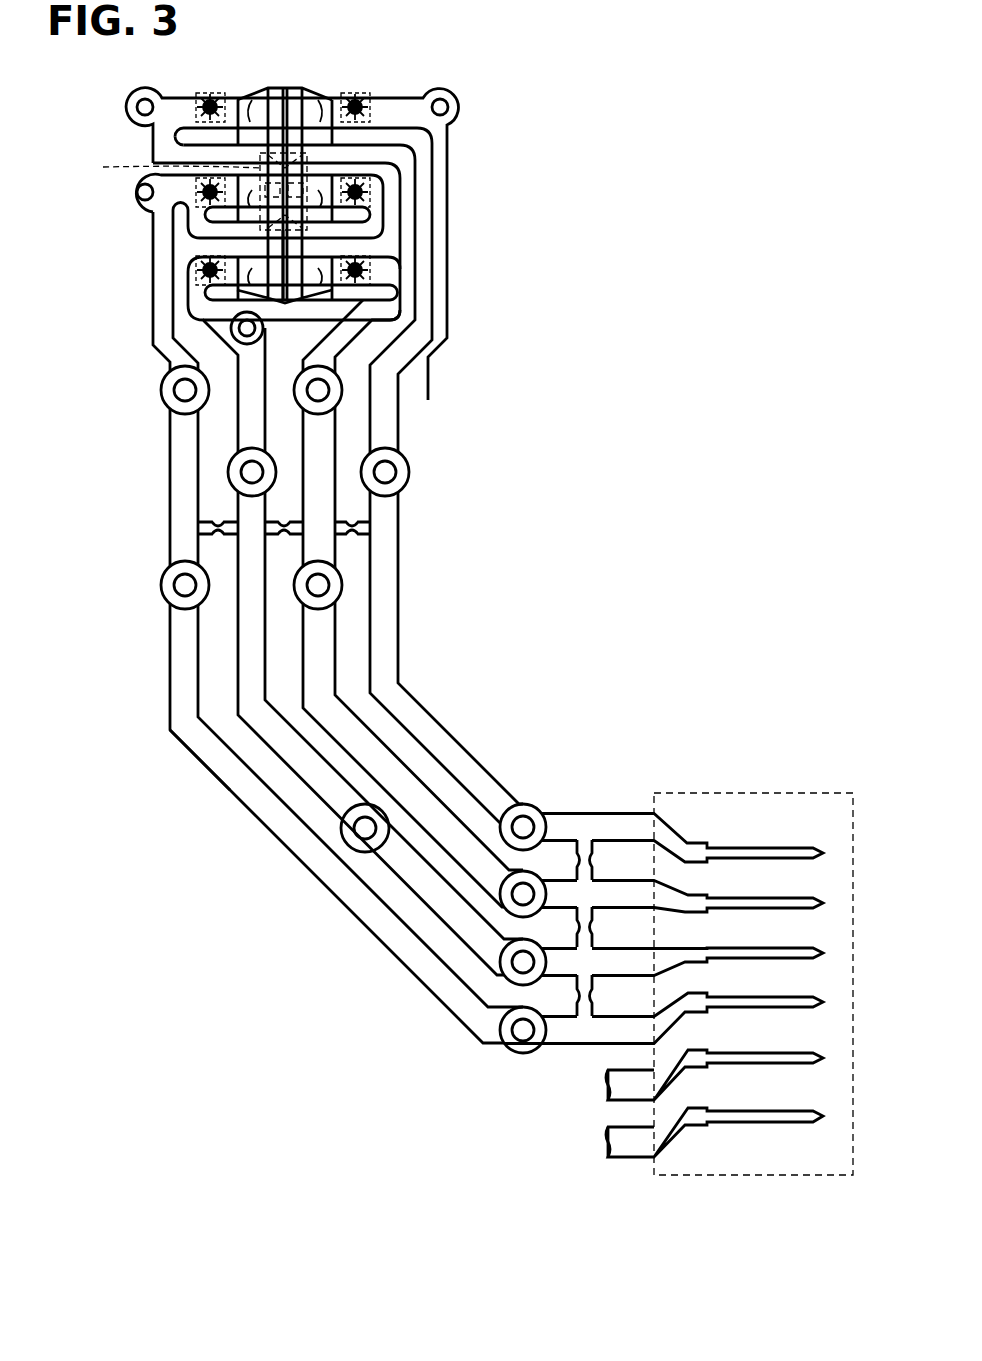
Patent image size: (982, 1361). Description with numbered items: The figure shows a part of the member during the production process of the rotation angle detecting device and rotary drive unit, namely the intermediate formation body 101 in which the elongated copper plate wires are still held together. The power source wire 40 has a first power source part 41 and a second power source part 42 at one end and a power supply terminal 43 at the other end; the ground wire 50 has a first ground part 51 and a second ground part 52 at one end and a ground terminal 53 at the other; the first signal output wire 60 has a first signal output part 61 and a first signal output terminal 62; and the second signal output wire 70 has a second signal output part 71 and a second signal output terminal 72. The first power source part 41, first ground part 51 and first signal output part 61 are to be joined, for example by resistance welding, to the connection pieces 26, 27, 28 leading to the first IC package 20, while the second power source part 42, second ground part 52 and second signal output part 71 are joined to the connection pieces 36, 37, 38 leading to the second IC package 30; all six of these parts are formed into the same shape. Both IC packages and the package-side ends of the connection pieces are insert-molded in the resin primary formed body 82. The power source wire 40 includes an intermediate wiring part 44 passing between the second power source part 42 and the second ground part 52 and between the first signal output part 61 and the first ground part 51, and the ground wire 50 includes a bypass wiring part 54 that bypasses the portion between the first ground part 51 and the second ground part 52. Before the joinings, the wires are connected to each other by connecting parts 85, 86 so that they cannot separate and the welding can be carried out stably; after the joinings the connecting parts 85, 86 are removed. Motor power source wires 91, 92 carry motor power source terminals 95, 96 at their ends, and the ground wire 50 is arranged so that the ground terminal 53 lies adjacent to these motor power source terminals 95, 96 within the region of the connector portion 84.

The first IC package 20 is at (310, 168).
The connection piece 26 is at (318, 283).
The connection piece 27 is at (318, 203).
The connection piece 28 is at (316, 100).
The second IC package 30 is at (165, 167).
The connection piece 36 is at (240, 100).
The connection piece 37 is at (250, 203).
The connection piece 38 is at (250, 283).
The power source wire 40 is at (318, 617).
The first power source part 41 is at (362, 270).
The second power source part 42 is at (213, 100).
The power supply terminal 43 is at (823, 903).
The intermediate wiring part 44 is at (264, 100).
The ground wire 50 is at (185, 622).
The first ground part 51 is at (362, 192).
The second ground part 52 is at (203, 192).
The ground terminal 53 is at (823, 1002).
The bypass wiring part 54 is at (290, 240).
The first signal output wire 60 is at (387, 655).
The first signal output part 61 is at (355, 100).
The first signal output terminal 62 is at (823, 853).
The second signal output wire 70 is at (250, 656).
The second signal output part 71 is at (203, 270).
The second signal output terminal 72 is at (823, 953).
The primary formed body 82 is at (286, 90).
The connector portion 84 is at (746, 792).
The connecting part 85 is at (350, 522).
The connecting part 86 is at (583, 998).
The motor power source wire 91 is at (620, 1088).
The motor power source wire 92 is at (638, 1142).
The motor power source terminal 95 is at (823, 1058).
The motor power source terminal 96 is at (823, 1116).
The intermediate formation body 101 is at (220, 768).